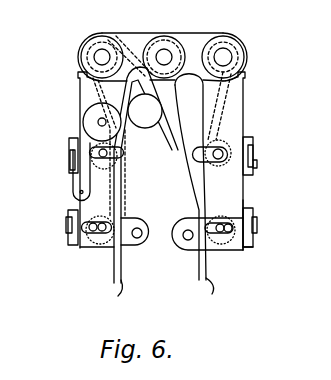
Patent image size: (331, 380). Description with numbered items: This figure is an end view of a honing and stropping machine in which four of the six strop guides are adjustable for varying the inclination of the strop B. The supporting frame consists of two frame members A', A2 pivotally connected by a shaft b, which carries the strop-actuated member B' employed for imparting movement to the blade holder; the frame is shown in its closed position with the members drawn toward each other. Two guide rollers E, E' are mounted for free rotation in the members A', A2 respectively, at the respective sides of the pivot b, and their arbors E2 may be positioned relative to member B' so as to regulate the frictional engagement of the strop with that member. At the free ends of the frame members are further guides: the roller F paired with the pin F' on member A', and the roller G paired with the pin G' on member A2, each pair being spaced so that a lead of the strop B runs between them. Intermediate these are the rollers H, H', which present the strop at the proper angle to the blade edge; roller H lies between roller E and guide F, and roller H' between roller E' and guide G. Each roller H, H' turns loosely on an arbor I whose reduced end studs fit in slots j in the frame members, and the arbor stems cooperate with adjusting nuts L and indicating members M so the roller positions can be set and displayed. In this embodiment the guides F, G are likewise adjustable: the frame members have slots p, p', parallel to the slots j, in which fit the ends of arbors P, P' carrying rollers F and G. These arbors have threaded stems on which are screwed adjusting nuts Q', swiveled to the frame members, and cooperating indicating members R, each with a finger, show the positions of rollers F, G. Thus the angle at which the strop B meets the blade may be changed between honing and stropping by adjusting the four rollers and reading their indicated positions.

The arbor E2 is at (253, 38).
The shaft b is at (165, 49).
The strop-actuated member B' is at (162, 46).
The guide roller E' is at (78, 150).
The frame member A' is at (248, 161).
The guide roller E is at (167, 175).
The arbor I is at (205, 156).
The slot j is at (207, 150).
The guide roller H' is at (109, 148).
The frame member A2 is at (92, 181).
The guide roller H is at (261, 145).
The adjusting nut L is at (254, 146).
The indicating member M is at (254, 165).
The guide roller F is at (261, 217).
The guide roller G is at (49, 221).
The guide pin G' is at (146, 225).
The guide pin F' is at (195, 249).
The adjusting nut Q' is at (158, 231).
The indicating member R is at (247, 248).
The slot p' is at (83, 255).
The arbor P' is at (87, 273).
The slot p is at (227, 255).
The arbor P is at (190, 262).
The strop B is at (163, 297).